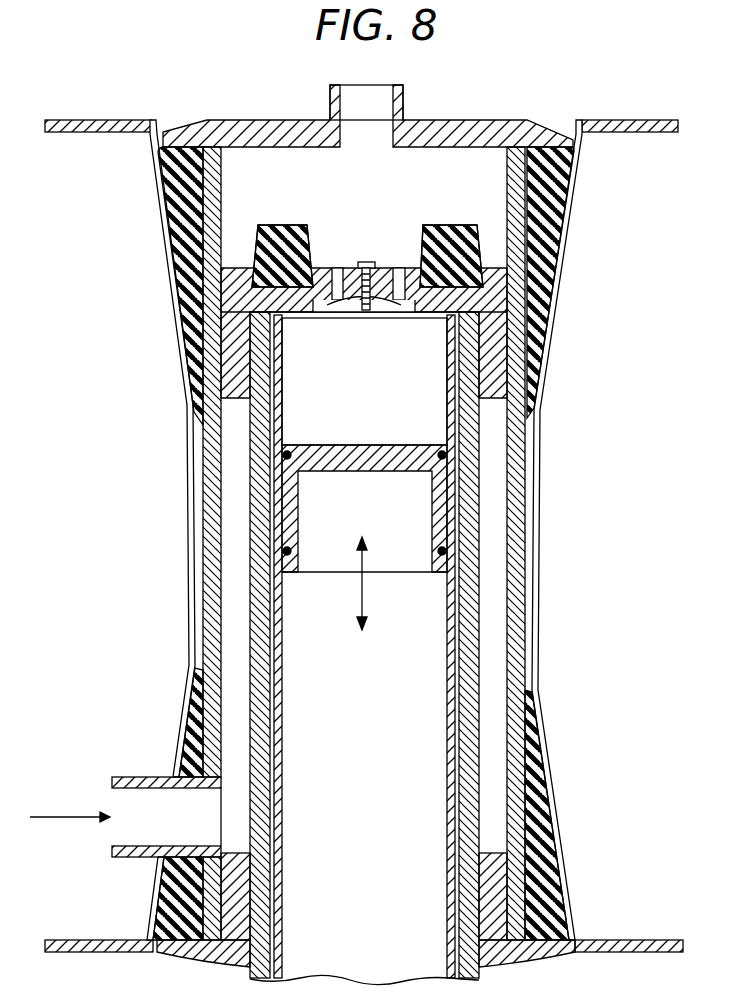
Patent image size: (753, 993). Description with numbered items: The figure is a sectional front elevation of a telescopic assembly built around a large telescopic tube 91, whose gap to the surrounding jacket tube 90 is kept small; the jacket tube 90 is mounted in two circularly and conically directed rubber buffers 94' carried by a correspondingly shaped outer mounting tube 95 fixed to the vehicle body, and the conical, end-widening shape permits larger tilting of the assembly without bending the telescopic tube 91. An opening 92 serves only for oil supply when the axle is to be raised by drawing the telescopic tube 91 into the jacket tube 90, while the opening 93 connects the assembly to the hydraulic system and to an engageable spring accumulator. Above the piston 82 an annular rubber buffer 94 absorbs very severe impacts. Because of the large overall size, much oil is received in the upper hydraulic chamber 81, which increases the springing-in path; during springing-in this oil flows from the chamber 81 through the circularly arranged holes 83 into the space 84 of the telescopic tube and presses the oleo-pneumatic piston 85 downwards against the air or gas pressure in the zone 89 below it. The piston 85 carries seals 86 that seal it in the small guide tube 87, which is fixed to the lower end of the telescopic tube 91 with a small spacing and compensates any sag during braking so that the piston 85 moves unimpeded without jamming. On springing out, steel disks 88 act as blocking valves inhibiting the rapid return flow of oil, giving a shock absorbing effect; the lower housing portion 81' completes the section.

The upper hydraulic chamber 81 is at (368, 139).
The housing wall 81' is at (398, 543).
The piston 82 is at (496, 400).
The circularly arranged holes 83 is at (397, 278).
The space of the telescopic tube 84 is at (380, 392).
The oleo-pneumatic piston 85 is at (322, 443).
The seals 86 is at (292, 551).
The guide tube 87 is at (284, 887).
The steel disks 88 is at (333, 314).
The zone 89 is at (374, 688).
The jacket tube 90 is at (517, 618).
The telescopic tube 91 is at (472, 697).
The opening 92 is at (138, 803).
The opening 93 is at (348, 108).
The annular rubber buffer 94 is at (367, 228).
The insulation 94' is at (366, 543).
The outer mounting tube 95 is at (90, 128).